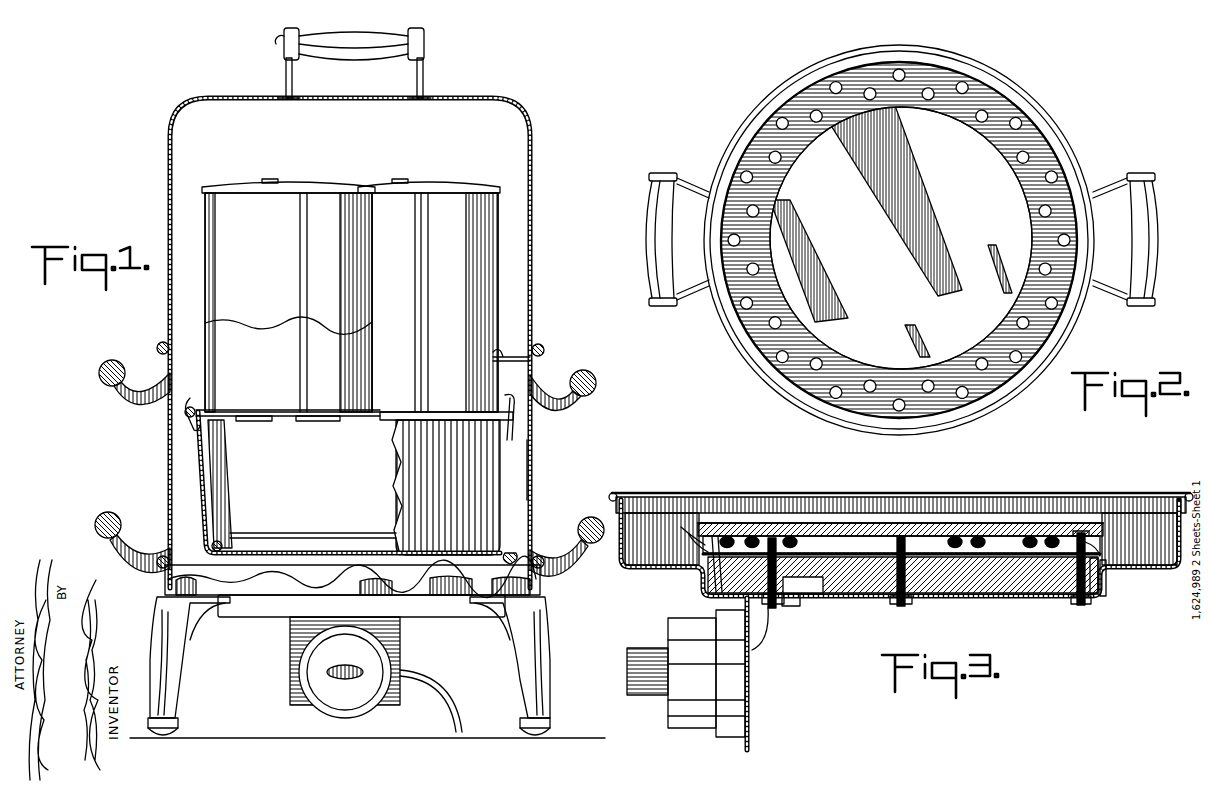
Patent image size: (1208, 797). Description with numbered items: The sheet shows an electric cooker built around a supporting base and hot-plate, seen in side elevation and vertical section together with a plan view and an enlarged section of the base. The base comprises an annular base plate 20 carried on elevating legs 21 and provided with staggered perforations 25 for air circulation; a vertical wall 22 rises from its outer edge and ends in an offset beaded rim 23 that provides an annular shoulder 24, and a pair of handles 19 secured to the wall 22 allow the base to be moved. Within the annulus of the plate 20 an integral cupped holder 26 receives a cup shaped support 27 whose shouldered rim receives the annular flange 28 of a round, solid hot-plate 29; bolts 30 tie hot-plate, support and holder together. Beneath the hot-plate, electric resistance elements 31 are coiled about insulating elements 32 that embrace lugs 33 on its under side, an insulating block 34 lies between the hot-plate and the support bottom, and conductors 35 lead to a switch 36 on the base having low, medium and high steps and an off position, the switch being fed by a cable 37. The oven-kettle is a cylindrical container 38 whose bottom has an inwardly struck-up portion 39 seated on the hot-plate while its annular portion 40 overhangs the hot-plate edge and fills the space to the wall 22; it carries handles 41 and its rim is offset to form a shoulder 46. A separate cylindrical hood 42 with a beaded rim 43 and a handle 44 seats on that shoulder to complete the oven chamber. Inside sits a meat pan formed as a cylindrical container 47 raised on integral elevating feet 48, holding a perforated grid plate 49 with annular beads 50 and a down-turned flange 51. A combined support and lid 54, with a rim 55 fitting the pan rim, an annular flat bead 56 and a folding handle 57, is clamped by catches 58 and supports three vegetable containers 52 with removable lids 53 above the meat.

In FIG. 1, the handles 19 is at (123, 541).
In FIG. 2, the handles 19 is at (1150, 258).
In FIG. 1, the annular base plate 20 is at (290, 604).
In FIG. 2, the annular base plate 20 is at (1072, 341).
In FIG. 3, the annular base plate 20 is at (660, 598).
In FIG. 1, the elevating legs 21 is at (535, 652).
In FIG. 1, the vertical wall 22 is at (163, 586).
In FIG. 3, the vertical wall 22 is at (620, 560).
In FIG. 2, the offset beaded rim 23 is at (1062, 120).
In FIG. 3, the offset beaded rim 23 is at (1186, 495).
In FIG. 2, the annular shoulder 24 is at (1077, 150).
In FIG. 3, the annular shoulder 24 is at (1176, 514).
In FIG. 2, the staggered perforations 25 is at (820, 124).
In FIG. 3, the staggered perforations 25 is at (640, 575).
In FIG. 1, the cupped holder 26 is at (219, 604).
In FIG. 3, the cupped holder 26 is at (1102, 582).
In FIG. 3, the cup shaped support 27 is at (692, 572).
In FIG. 3, the annular flange 28 is at (724, 538).
In FIG. 1, the hot-plate 29 is at (322, 587).
In FIG. 2, the hot-plate 29 is at (901, 234).
In FIG. 3, the hot-plate 29 is at (792, 523).
In FIG. 3, the bolts 30 is at (918, 598).
In FIG. 3, the electric resistance elements 31 is at (755, 537).
In FIG. 3, the electric insulating elements 32 is at (787, 523).
In FIG. 3, the lugs 33 is at (976, 538).
In FIG. 3, the insulating block 34 is at (1026, 594).
In FIG. 3, the conductors 35 is at (772, 630).
In FIG. 1, the switch 36 is at (400, 641).
In FIG. 3, the switch 36 is at (746, 688).
In FIG. 1, the cable 37 is at (445, 690).
In FIG. 1, the cylindrical container 38 is at (531, 482).
In FIG. 1, the struck-up bottom portion 39 is at (374, 597).
In FIG. 1, the annular portion 40 is at (512, 553).
In FIG. 1, the handles 41 is at (572, 404).
In FIG. 1, the cylindrical hood 42 is at (168, 199).
In FIG. 1, the beaded rim 43 is at (502, 358).
In FIG. 1, the handle 44 is at (376, 44).
In FIG. 1, the shoulder 46 is at (541, 352).
In FIG. 1, the cylindrical container 47 is at (200, 501).
In FIG. 1, the elevating feet 48 is at (219, 597).
In FIG. 1, the perforated plate 49 is at (224, 528).
In FIG. 1, the annular beads 50 is at (252, 534).
In FIG. 1, the down-turned flange 51 is at (212, 546).
In FIG. 1, the cylindrical containers 52 is at (478, 236).
In FIG. 1, the removable lids 53 is at (438, 182).
In FIG. 1, the combined support and lid 54 is at (440, 412).
In FIG. 1, the rim 55 is at (170, 425).
In FIG. 1, the annular flat bead 56 is at (256, 422).
In FIG. 1, the folding handle 57 is at (318, 422).
In FIG. 1, the catches 58 is at (185, 440).